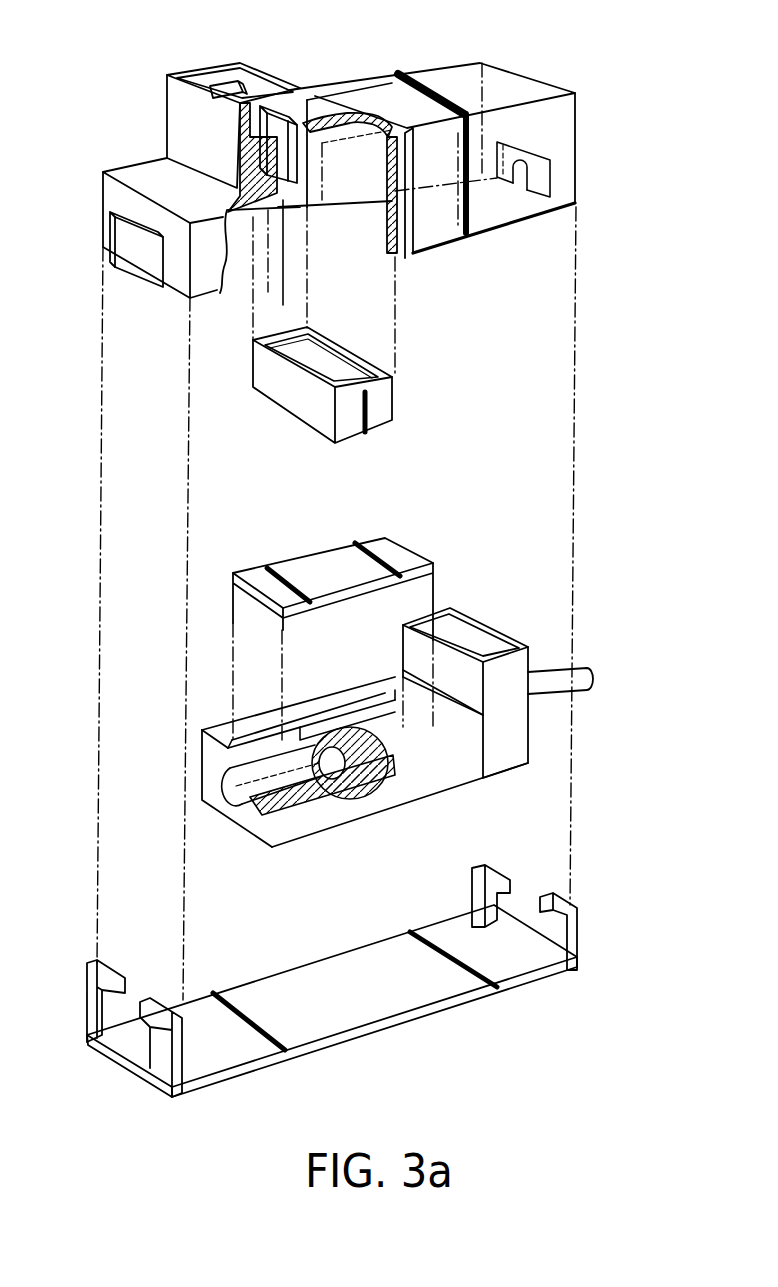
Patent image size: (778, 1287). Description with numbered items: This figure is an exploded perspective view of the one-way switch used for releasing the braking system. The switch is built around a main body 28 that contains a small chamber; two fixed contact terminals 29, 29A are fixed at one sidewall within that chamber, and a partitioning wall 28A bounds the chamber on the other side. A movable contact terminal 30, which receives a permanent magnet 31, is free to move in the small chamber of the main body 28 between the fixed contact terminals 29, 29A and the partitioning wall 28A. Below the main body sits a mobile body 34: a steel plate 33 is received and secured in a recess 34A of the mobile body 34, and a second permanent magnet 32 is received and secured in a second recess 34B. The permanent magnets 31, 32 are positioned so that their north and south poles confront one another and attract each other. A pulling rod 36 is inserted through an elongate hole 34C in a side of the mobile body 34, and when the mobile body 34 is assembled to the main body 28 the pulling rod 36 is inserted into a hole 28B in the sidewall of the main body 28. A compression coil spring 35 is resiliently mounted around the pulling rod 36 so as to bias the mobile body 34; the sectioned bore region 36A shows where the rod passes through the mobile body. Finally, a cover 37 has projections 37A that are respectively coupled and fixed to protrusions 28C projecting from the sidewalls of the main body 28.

The main body 28 is at (437, 82).
The partitioning wall 28A is at (318, 195).
The hole 28B is at (512, 163).
The protrusions 28C is at (548, 200).
The fixed contact terminal 29 is at (290, 108).
The fixed contact terminal 29A is at (237, 77).
The movable contact terminal 30 is at (380, 417).
The permanent magnet 31 is at (340, 372).
The second permanent magnet 32 is at (470, 635).
The steel plate 33 is at (307, 570).
The mobile body 34 is at (520, 670).
The recess 34A is at (313, 725).
The second recess 34B is at (527, 645).
The elongate hole 34C is at (225, 780).
The compression coil spring 35 is at (367, 797).
The pulling rod 36 is at (550, 707).
The shaft bore 36A is at (325, 810).
The cover 37 is at (420, 995).
The projections 37A is at (143, 1013).